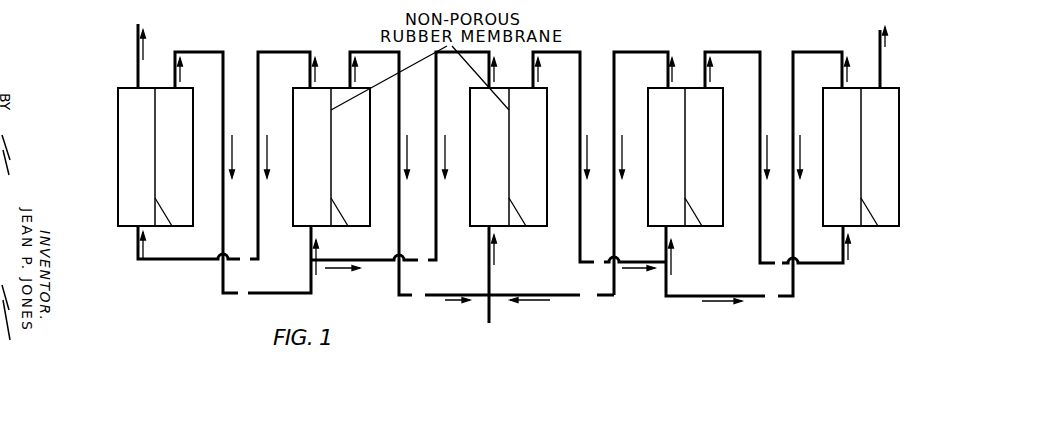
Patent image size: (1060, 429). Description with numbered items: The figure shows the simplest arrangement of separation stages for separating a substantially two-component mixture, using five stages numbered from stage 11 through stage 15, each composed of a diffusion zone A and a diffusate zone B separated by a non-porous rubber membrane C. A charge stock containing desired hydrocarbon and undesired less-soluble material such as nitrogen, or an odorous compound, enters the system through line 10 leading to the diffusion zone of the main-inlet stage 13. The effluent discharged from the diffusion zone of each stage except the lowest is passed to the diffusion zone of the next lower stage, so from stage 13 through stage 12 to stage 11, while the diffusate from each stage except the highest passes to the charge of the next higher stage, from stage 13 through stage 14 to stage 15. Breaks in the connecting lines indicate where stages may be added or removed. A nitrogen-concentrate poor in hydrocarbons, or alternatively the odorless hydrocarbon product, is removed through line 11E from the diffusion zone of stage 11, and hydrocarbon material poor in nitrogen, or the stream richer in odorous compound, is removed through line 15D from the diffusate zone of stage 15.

The charge line 10 is at (485, 303).
The separation stage 11 is at (118, 175).
The diffusion zone effluent line 11E is at (141, 26).
The separation stage 12 is at (293, 181).
The separation stage 13 is at (470, 181).
The separation stage 14 is at (648, 181).
The separation stage 15 is at (900, 183).
The diffusate discharge line 15D is at (878, 44).